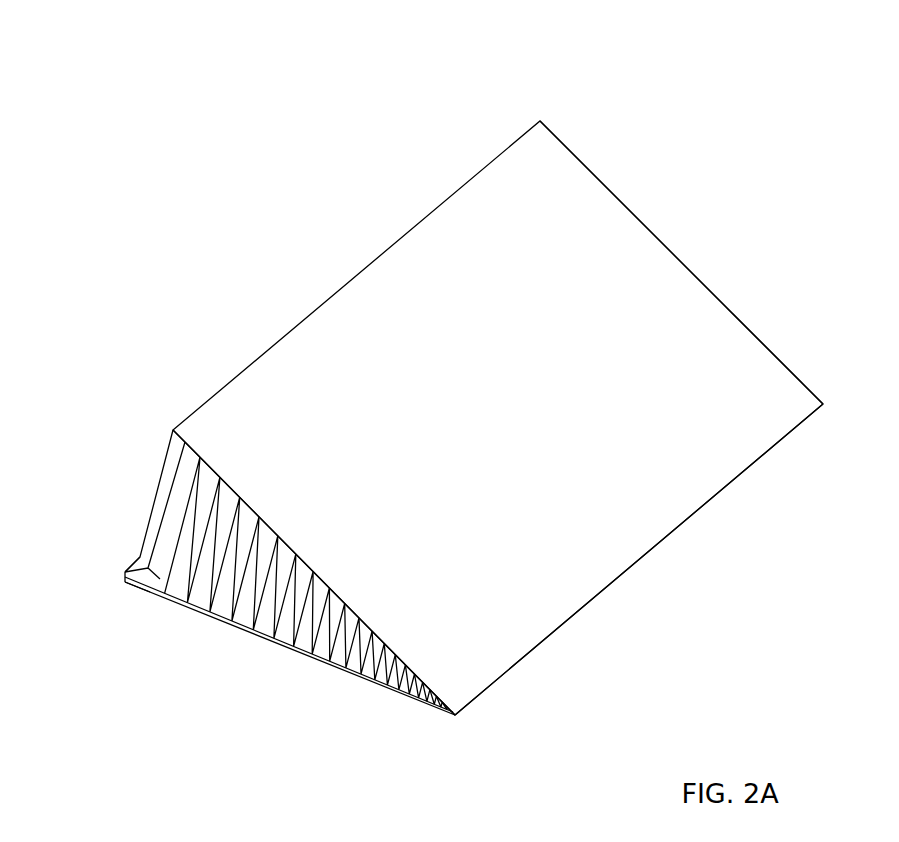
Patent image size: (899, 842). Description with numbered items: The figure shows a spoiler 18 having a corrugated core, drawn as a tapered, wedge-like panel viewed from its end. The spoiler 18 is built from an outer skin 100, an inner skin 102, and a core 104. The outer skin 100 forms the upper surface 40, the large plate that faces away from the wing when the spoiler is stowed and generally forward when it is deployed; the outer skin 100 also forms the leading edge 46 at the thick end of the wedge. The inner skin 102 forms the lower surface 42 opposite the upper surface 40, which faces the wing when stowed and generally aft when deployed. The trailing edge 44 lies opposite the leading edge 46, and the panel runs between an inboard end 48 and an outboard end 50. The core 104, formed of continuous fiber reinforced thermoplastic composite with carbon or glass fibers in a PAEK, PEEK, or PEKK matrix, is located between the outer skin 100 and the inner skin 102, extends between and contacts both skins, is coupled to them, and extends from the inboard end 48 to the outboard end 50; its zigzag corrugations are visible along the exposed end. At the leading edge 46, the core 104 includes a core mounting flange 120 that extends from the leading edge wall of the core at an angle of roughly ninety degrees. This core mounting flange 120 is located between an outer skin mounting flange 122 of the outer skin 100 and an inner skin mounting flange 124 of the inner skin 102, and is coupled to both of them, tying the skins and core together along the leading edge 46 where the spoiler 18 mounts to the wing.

The spoiler 18 is at (696, 110).
The upper surface 40 is at (468, 415).
The lower surface 42 is at (232, 627).
The trailing edge 44 is at (615, 582).
The leading edge 46 is at (160, 497).
The inboard end 48 is at (682, 264).
The outboard end 50 is at (322, 658).
The outer skin 100 is at (450, 247).
The inner skin 102 is at (263, 637).
The core 104 is at (195, 466).
The core mounting flange 120 is at (125, 578).
The outer skin mounting flange 122 is at (128, 585).
The inner skin mounting flange 124 is at (140, 560).